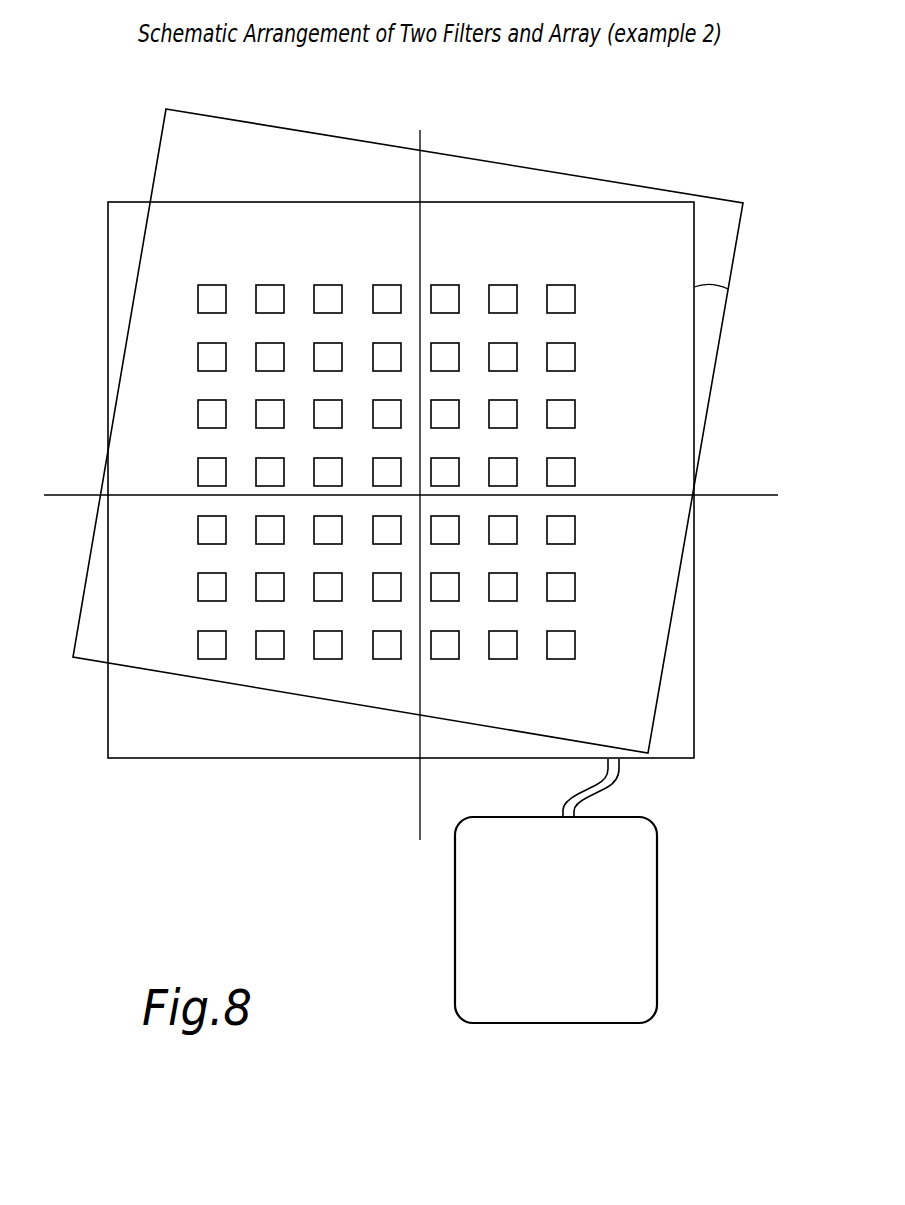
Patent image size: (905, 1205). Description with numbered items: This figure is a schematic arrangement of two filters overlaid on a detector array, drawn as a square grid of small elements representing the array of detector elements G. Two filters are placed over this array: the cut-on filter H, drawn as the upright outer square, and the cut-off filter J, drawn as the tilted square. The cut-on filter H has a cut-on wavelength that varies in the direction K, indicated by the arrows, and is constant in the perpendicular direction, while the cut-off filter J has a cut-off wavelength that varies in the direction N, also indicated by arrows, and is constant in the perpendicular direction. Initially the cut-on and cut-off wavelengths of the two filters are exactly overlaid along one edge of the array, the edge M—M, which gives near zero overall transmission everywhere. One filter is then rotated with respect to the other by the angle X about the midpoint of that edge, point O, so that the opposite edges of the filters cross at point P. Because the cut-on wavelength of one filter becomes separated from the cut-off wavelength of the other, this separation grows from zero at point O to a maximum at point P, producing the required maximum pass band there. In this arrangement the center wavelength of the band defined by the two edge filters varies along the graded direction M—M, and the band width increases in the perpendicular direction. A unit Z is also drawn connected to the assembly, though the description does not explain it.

The cut-on filter H is at (123, 759).
The cut-off filter J is at (737, 248).
The array of detector elements G is at (250, 270).
The control unit Z is at (556, 891).
The direction N is at (150, 138).
The direction K is at (98, 270).
The edge of the array M— M is at (704, 472).
The angle x X is at (711, 304).
The point O is at (718, 477).
The point P is at (108, 447).